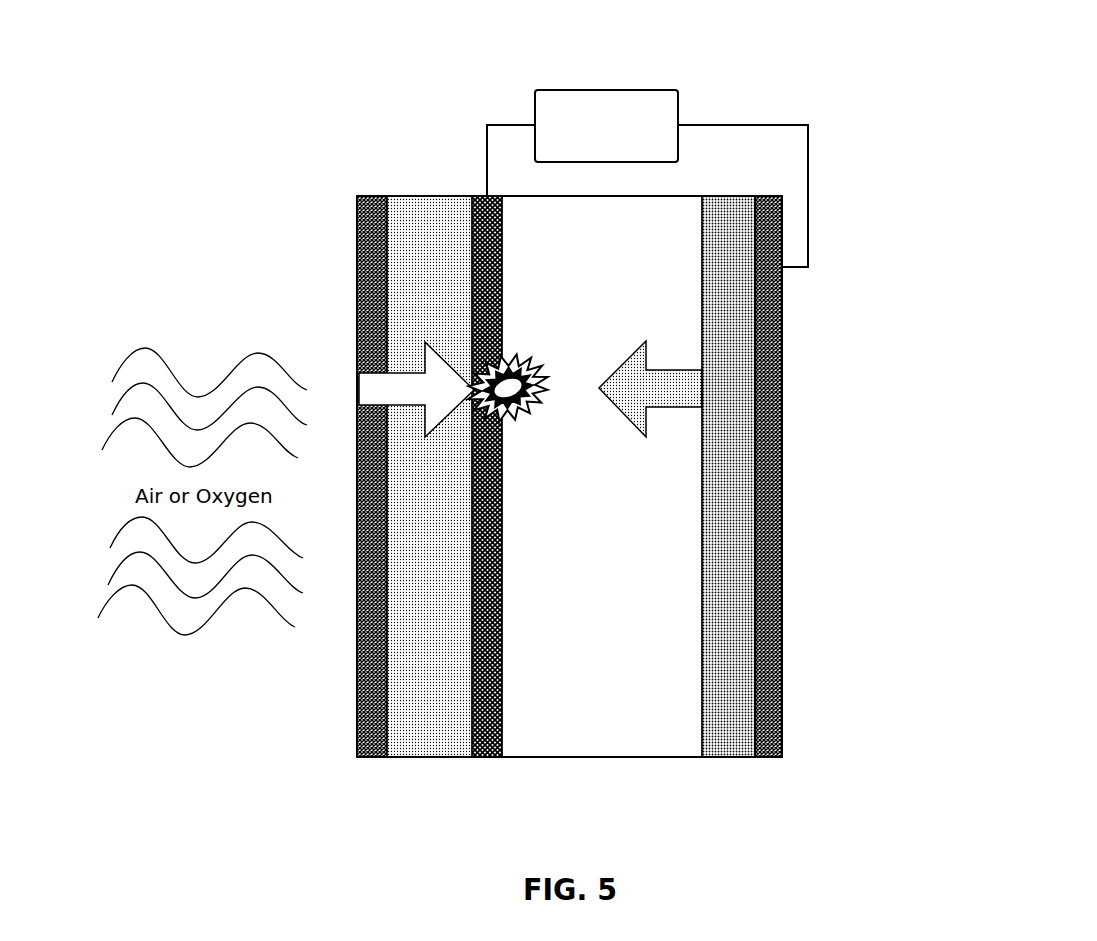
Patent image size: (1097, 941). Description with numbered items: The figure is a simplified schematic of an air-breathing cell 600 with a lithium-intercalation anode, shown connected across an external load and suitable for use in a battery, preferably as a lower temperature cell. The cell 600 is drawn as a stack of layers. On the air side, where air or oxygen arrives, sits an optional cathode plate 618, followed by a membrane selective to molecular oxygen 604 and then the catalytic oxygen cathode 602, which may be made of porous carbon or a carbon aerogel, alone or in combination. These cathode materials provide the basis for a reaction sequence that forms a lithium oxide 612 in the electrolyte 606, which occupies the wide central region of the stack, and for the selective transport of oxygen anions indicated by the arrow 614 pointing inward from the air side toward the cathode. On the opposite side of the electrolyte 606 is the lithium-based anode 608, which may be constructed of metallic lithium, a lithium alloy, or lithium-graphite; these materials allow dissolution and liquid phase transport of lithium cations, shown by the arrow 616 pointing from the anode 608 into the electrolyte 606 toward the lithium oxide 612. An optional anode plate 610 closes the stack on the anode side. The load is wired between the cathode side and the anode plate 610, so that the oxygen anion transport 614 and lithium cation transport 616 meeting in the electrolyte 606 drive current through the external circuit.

The cell 600 is at (812, 65).
The catalytic oxygen cathode 602 is at (482, 757).
The membrane selective to molecular oxygen 604 is at (452, 702).
The electrolyte 606 is at (615, 701).
The lithium-based anode 608 is at (725, 757).
The anode plate 610 is at (782, 710).
The lithium oxide 612 is at (523, 350).
The arrow indicating selective transport of oxygen anions 614 is at (445, 399).
The arrow indicating liquid phase transport of lithium cations 616 is at (665, 401).
The cathode plate 618 is at (357, 717).